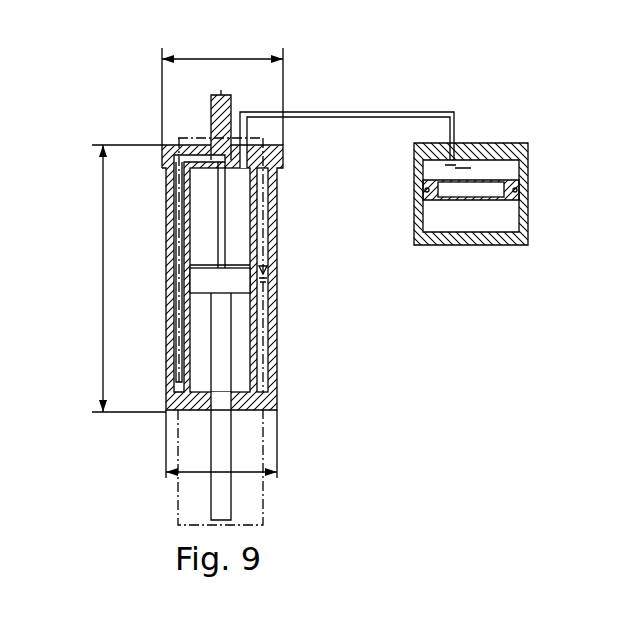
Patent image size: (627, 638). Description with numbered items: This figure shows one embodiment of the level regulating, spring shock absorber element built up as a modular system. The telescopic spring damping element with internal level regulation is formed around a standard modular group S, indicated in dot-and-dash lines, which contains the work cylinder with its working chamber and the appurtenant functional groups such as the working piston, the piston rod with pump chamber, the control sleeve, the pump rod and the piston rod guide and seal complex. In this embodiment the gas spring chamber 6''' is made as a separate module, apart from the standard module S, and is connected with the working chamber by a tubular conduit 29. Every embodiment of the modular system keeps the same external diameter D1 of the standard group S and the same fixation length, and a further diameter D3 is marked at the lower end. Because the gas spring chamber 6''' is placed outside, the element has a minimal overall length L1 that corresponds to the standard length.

The tubular conduit 29 is at (348, 114).
The gas spring chamber 6''' is at (508, 194).
The standard modular group S is at (178, 478).
The external diameter D1 is at (222, 88).
The diameter D3 is at (221, 444).
The minimal overall length L1 is at (129, 278).